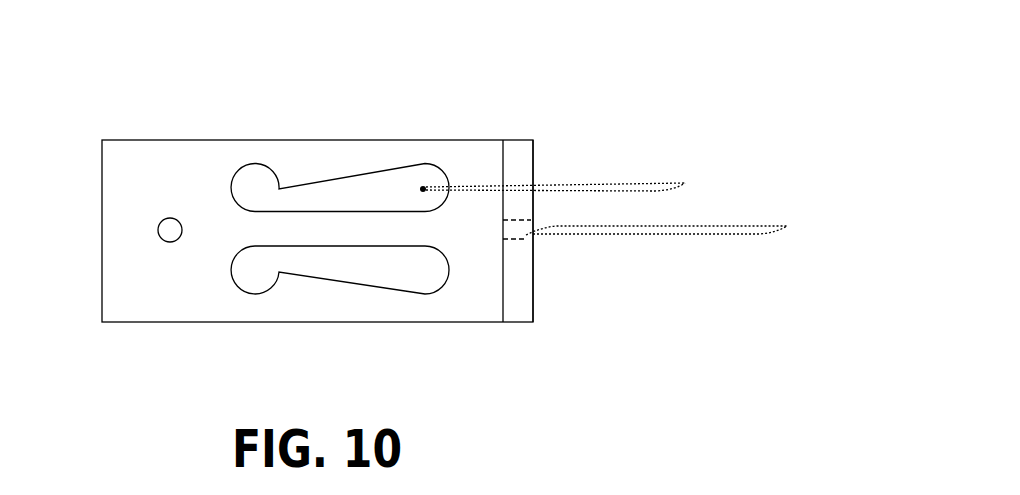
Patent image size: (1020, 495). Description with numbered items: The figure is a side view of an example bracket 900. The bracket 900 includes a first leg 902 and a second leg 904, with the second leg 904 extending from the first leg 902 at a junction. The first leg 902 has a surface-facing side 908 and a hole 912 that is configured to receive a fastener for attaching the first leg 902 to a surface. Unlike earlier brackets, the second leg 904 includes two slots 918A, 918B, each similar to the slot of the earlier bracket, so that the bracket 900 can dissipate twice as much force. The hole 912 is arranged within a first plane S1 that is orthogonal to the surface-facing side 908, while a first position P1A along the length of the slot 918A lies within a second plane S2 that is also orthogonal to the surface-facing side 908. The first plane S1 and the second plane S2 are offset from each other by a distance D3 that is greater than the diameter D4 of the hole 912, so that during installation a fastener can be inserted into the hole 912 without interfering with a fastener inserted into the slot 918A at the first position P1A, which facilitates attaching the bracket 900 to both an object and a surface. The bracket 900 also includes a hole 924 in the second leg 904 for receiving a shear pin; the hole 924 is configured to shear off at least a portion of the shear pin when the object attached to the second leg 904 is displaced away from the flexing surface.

The bracket 900 is at (86, 72).
The first leg 902 is at (523, 322).
The second leg 904 is at (140, 322).
The surface-facing side 908 is at (542, 147).
The hole 912 is at (520, 218).
The slot 918A is at (405, 166).
The slot 918B is at (403, 295).
The hole 924 is at (181, 233).
The first position P1A is at (533, 195).
The first plane S1 is at (615, 230).
The second plane S2 is at (627, 190).
The distance D3 is at (672, 191).
The diameter D4 is at (511, 198).